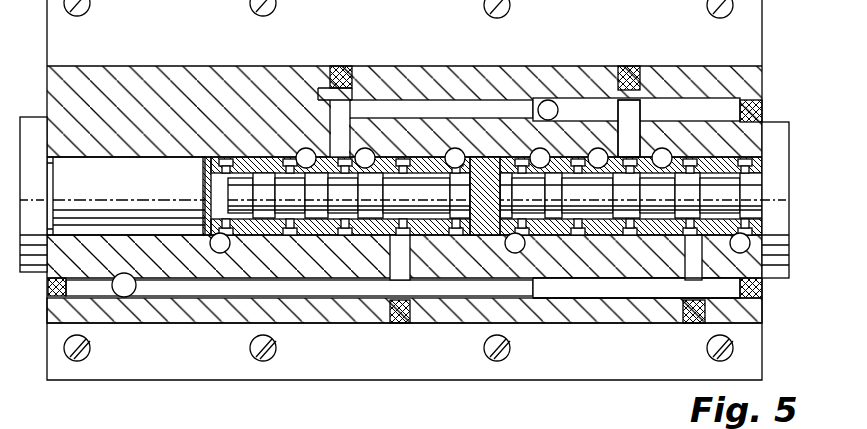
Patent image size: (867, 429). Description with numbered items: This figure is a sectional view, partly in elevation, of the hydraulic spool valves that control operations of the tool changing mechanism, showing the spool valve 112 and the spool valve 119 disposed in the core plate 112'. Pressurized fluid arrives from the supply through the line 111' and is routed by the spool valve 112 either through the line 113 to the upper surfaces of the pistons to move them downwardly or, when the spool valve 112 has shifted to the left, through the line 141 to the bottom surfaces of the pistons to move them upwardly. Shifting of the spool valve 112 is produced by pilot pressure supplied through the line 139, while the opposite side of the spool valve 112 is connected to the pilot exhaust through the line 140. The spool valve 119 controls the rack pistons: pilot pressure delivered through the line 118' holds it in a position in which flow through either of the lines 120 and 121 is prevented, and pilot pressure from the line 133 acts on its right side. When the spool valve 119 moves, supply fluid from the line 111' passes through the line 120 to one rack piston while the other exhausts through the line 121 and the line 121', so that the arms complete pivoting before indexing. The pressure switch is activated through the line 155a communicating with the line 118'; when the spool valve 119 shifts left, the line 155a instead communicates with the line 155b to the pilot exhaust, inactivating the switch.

The line 111' is at (534, 80).
The spool valve 112 is at (404, 196).
The core plate 112' is at (404, 208).
The line 113 is at (370, 149).
The line 118' is at (489, 251).
The spool valve 119 is at (765, 196).
The line 120 is at (625, 124).
The line 121 is at (688, 149).
The line 121' is at (131, 311).
The line 133 is at (750, 245).
The line 139 is at (456, 148).
The line 140 is at (214, 247).
The line 141 is at (306, 148).
The line 155a is at (531, 155).
The line 155b is at (636, 291).